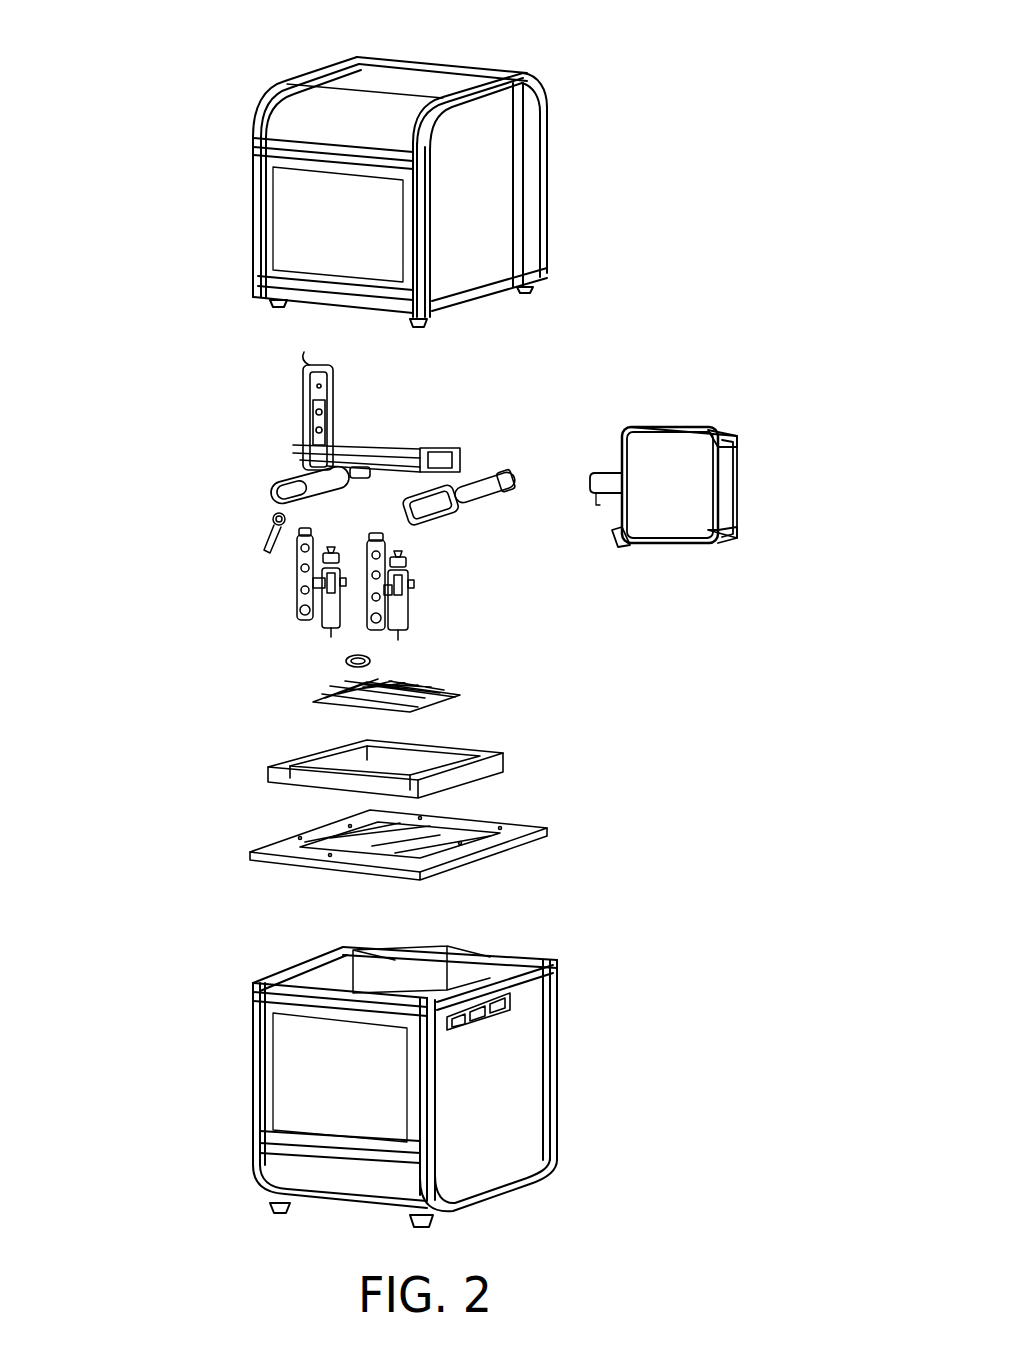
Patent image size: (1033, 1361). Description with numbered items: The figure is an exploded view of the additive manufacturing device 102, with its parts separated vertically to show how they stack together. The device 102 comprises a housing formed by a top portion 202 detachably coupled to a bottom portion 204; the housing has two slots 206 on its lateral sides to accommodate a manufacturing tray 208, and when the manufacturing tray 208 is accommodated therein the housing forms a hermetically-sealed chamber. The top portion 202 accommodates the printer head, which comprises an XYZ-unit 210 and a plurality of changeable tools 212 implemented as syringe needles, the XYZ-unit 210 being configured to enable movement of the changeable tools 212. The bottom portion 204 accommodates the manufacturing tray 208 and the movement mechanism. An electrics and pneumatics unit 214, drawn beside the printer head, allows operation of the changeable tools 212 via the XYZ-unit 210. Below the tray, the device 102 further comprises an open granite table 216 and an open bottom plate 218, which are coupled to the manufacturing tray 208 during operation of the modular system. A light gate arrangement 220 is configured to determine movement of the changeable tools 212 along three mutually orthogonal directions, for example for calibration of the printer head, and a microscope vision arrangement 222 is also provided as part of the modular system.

The additive manufacturing device 102 is at (721, 69).
The top portion 202 is at (258, 212).
The bottom portion 204 is at (262, 1076).
The slots 206 is at (505, 1002).
The manufacturing tray 208 is at (450, 692).
The XYZ-unit 210 is at (277, 483).
The changeable tools 212 is at (410, 608).
The electrics and pneumatics unit 214 is at (668, 467).
The open granite table 216 is at (275, 765).
The open bottom plate 218 is at (268, 847).
The light gate arrangement 220 is at (347, 661).
The microscope vision arrangement 222 is at (270, 542).